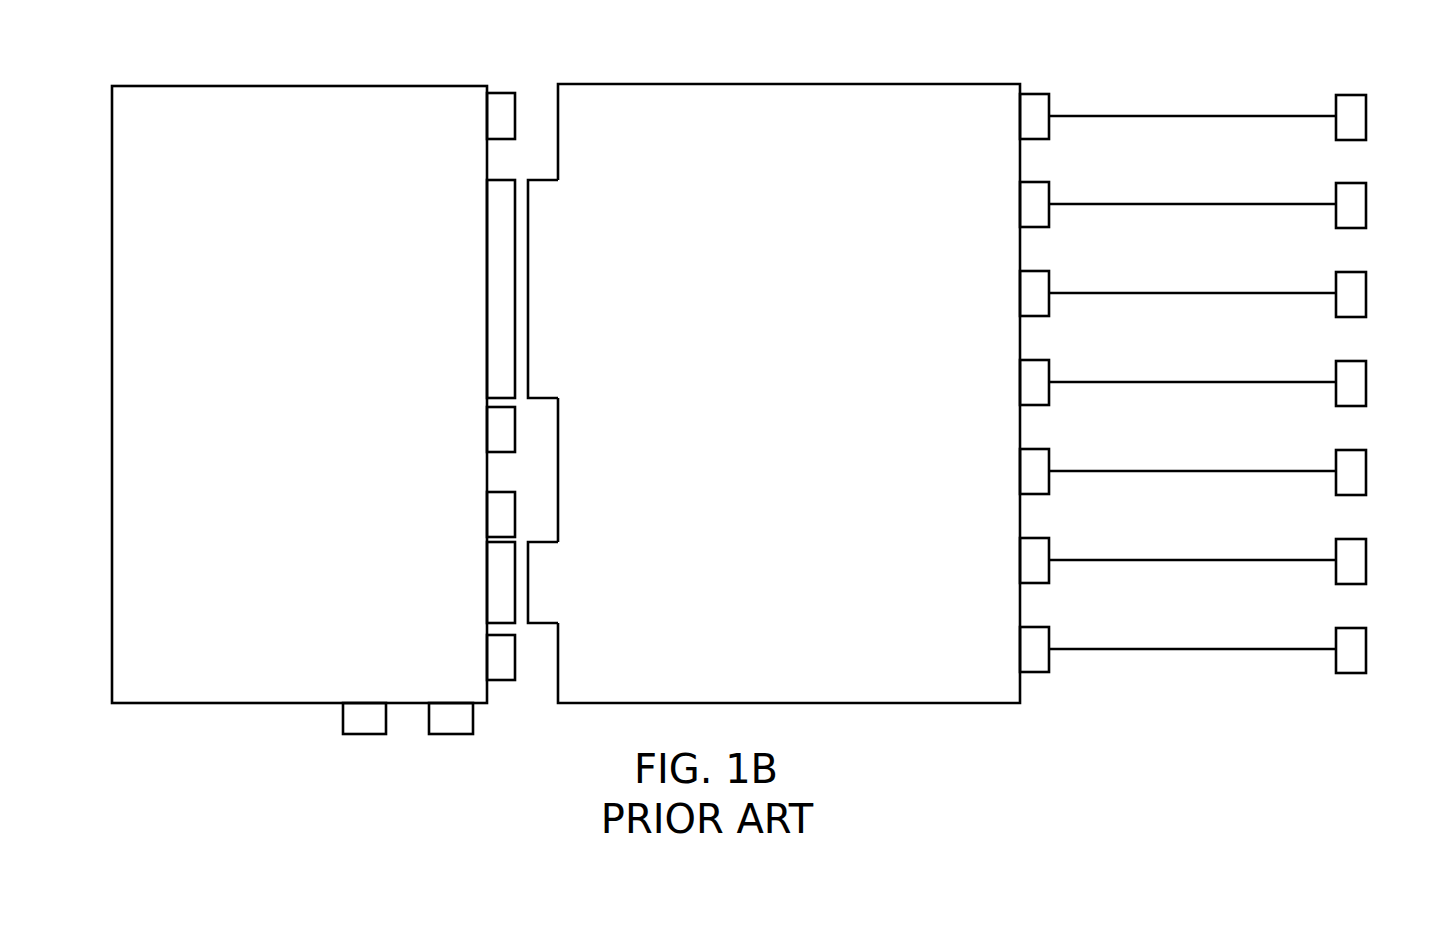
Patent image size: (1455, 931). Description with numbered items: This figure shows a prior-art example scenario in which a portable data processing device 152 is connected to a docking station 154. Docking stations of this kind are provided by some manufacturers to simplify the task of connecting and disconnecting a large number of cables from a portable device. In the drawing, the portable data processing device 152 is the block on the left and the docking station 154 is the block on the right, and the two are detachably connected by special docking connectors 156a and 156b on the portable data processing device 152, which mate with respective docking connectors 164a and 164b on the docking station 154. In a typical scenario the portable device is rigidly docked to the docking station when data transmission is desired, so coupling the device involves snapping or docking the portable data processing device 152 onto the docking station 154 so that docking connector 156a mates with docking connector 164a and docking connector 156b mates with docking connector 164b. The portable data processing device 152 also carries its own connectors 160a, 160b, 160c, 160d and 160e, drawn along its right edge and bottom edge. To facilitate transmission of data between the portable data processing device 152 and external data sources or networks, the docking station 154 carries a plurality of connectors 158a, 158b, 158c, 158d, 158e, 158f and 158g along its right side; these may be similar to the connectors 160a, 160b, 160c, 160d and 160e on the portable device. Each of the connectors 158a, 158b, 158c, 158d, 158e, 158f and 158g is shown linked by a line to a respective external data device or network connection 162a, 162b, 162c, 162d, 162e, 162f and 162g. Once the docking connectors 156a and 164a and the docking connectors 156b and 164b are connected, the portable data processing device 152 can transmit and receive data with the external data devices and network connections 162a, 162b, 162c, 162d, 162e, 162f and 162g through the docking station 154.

The portable data processing device 152 is at (299, 394).
The docking station 154 is at (789, 393).
The docking connector 156a is at (500, 294).
The docking connector 156b is at (503, 581).
The connector 158a is at (1037, 109).
The connector 158b is at (1037, 197).
The connector 158c is at (1037, 286).
The connector 158d is at (1037, 375).
The connector 158e is at (1037, 464).
The connector 158f is at (1037, 553).
The connector 158g is at (1037, 642).
The connector 160a is at (493, 118).
The connector 160b is at (502, 432).
The connector 160c is at (505, 511).
The connector 160d is at (498, 662).
The connector 160e is at (357, 720).
The external data device or network connection 162a is at (1348, 108).
The external data device or network connection 162b is at (1348, 196).
The external data device or network connection 162c is at (1348, 285).
The external data device or network connection 162d is at (1348, 374).
The external data device or network connection 162e is at (1348, 463).
The external data device or network connection 162f is at (1348, 552).
The external data device or network connection 162g is at (1348, 641).
The docking connector 164a is at (540, 295).
The docking connector 164b is at (545, 578).